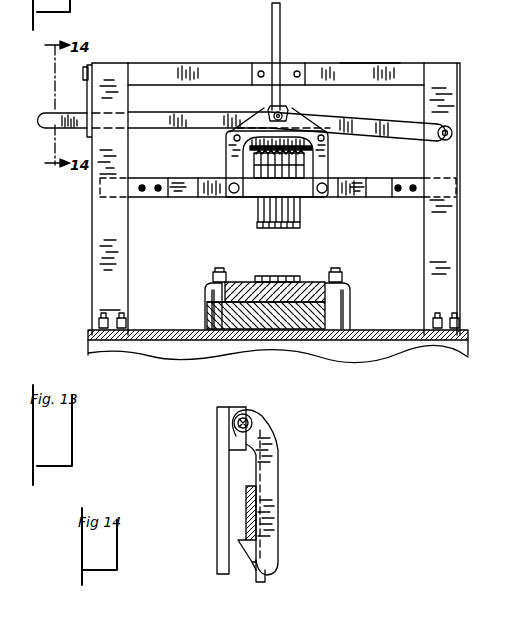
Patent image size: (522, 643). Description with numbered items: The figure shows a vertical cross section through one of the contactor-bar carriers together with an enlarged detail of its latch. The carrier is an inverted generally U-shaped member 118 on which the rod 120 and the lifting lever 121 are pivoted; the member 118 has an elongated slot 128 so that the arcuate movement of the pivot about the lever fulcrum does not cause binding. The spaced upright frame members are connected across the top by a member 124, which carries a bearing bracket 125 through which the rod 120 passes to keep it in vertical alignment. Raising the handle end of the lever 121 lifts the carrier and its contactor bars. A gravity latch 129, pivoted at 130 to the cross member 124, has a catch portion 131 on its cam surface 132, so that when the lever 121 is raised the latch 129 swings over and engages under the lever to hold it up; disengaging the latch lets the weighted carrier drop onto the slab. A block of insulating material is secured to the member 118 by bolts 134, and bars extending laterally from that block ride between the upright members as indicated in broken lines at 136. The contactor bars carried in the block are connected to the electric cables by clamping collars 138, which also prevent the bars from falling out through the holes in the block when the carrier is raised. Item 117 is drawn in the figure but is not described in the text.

In FIG. 13, the contact clip 117 is at (266, 278).
In FIG. 13, the inverted generally U-shaped member 118 is at (329, 151).
In FIG. 13, the rod 120 is at (272, 24).
In FIG. 14, the lifting lever 121 is at (246, 500).
In FIG. 13, the member 124 is at (370, 64).
In FIG. 14, the member 124 is at (243, 408).
In FIG. 13, the bearing bracket 125 is at (289, 66).
In FIG. 13, the slot 128 is at (268, 114).
In FIG. 13, the gravity latch 129 is at (90, 104).
In FIG. 14, the gravity latch 129 is at (272, 490).
In FIG. 13, the pivot 130 is at (83, 72).
In FIG. 14, the pivot 130 is at (249, 421).
In FIG. 14, the catch portion 131 is at (246, 544).
In FIG. 14, the cam surface 132 is at (256, 564).
In FIG. 13, the bolt 134 is at (323, 193).
In FIG. 13, the member 136 is at (100, 184).
In FIG. 13, the clamping collar 138 is at (296, 176).